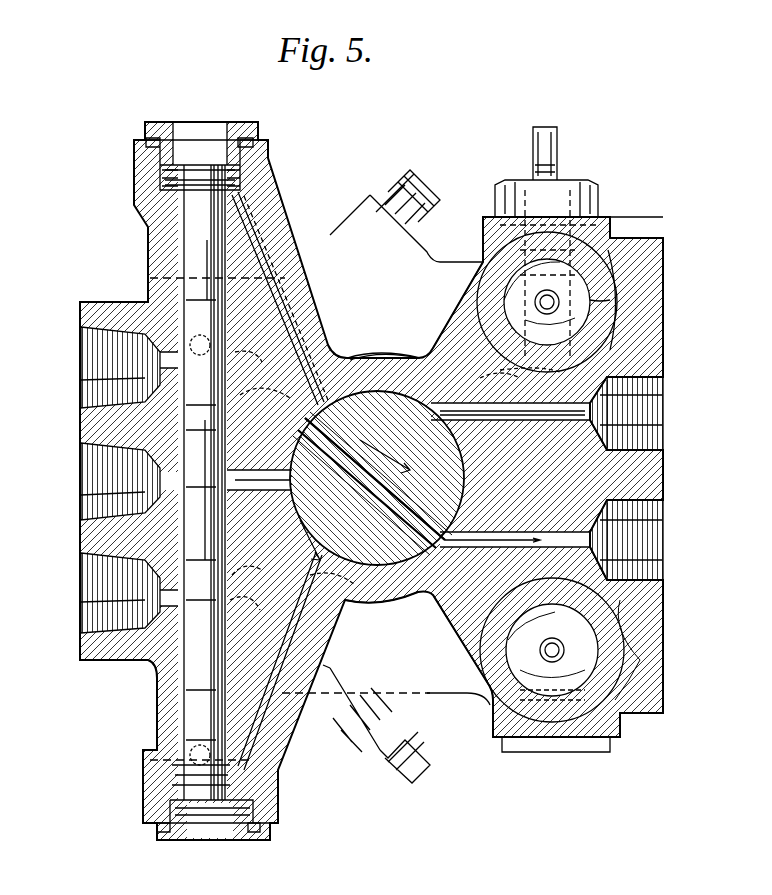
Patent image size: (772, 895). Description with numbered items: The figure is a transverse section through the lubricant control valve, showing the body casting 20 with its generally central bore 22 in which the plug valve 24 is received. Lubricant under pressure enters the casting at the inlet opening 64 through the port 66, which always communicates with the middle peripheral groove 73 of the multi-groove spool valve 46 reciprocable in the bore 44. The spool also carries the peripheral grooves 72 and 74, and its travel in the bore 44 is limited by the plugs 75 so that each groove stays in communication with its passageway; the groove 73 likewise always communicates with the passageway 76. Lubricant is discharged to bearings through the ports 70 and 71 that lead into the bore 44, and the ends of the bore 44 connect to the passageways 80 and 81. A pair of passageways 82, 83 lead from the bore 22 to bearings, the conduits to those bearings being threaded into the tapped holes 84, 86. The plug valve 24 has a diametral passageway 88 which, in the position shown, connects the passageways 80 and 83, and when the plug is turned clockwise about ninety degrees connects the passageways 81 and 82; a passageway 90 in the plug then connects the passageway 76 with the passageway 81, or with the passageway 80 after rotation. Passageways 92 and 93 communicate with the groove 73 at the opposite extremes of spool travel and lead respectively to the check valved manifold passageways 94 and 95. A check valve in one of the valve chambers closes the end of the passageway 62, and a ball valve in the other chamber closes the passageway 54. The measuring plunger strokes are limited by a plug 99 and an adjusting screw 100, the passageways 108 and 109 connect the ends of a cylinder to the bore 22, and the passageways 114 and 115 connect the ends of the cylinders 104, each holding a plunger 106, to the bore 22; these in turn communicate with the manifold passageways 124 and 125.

The body casting 20 is at (447, 277).
The central bore 22 is at (355, 360).
The plug valve 24 is at (388, 365).
The bore 44 is at (190, 752).
The spool valve 46 is at (192, 252).
The passageway 54 is at (558, 296).
The passageway 62 is at (565, 652).
The inlet opening 64 is at (100, 455).
The port 66 is at (160, 487).
The port 70 is at (176, 368).
The port 71 is at (170, 596).
The peripheral groove 72 is at (178, 274).
The peripheral groove 73 is at (234, 462).
The peripheral groove 74 is at (238, 645).
The plug 75 is at (243, 124).
The passageway 76 is at (280, 466).
The passageway 80 is at (270, 240).
The passageway 81 is at (280, 700).
The passageway 82 is at (508, 422).
The passageway 83 is at (520, 530).
The tapped hole 84 is at (645, 446).
The tapped hole 86 is at (668, 506).
The diametral passageway 88 is at (410, 498).
The passageway 90 is at (312, 520).
The passageway 92 is at (258, 352).
The passageway 93 is at (240, 568).
The manifold passageway 94 is at (196, 342).
The manifold passageway 95 is at (172, 632).
The plug 99 is at (284, 268).
The adjusting screw 100 is at (178, 764).
The cylinder 104 is at (668, 336).
The plunger 106 is at (484, 380).
The passageway 108 is at (248, 390).
The passageway 109 is at (330, 582).
The passageway 114 is at (450, 323).
The passageway 115 is at (470, 630).
The manifold passageway 124 is at (598, 300).
The manifold passageway 125 is at (500, 678).